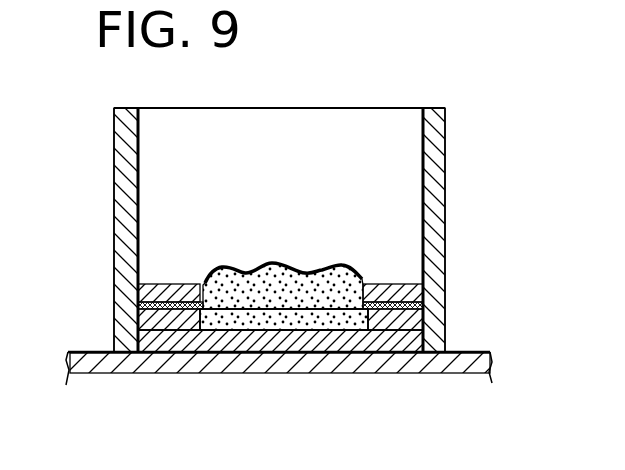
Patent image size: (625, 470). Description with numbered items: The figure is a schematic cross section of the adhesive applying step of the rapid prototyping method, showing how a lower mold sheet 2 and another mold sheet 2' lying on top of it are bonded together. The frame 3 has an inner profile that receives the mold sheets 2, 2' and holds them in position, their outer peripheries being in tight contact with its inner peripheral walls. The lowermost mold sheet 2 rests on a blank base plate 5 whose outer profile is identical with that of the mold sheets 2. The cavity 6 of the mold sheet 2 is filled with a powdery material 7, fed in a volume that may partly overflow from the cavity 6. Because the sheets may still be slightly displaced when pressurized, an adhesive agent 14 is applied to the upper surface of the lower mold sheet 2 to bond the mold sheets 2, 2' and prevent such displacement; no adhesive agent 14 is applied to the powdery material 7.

The mold sheet 2 is at (323, 326).
The additional mold sheet 2' is at (330, 292).
The frame 3 is at (437, 239).
The base plate 5 is at (369, 337).
The cavity 6 is at (238, 318).
The powdery material 7 is at (323, 270).
The adhesive agent 14 is at (174, 302).